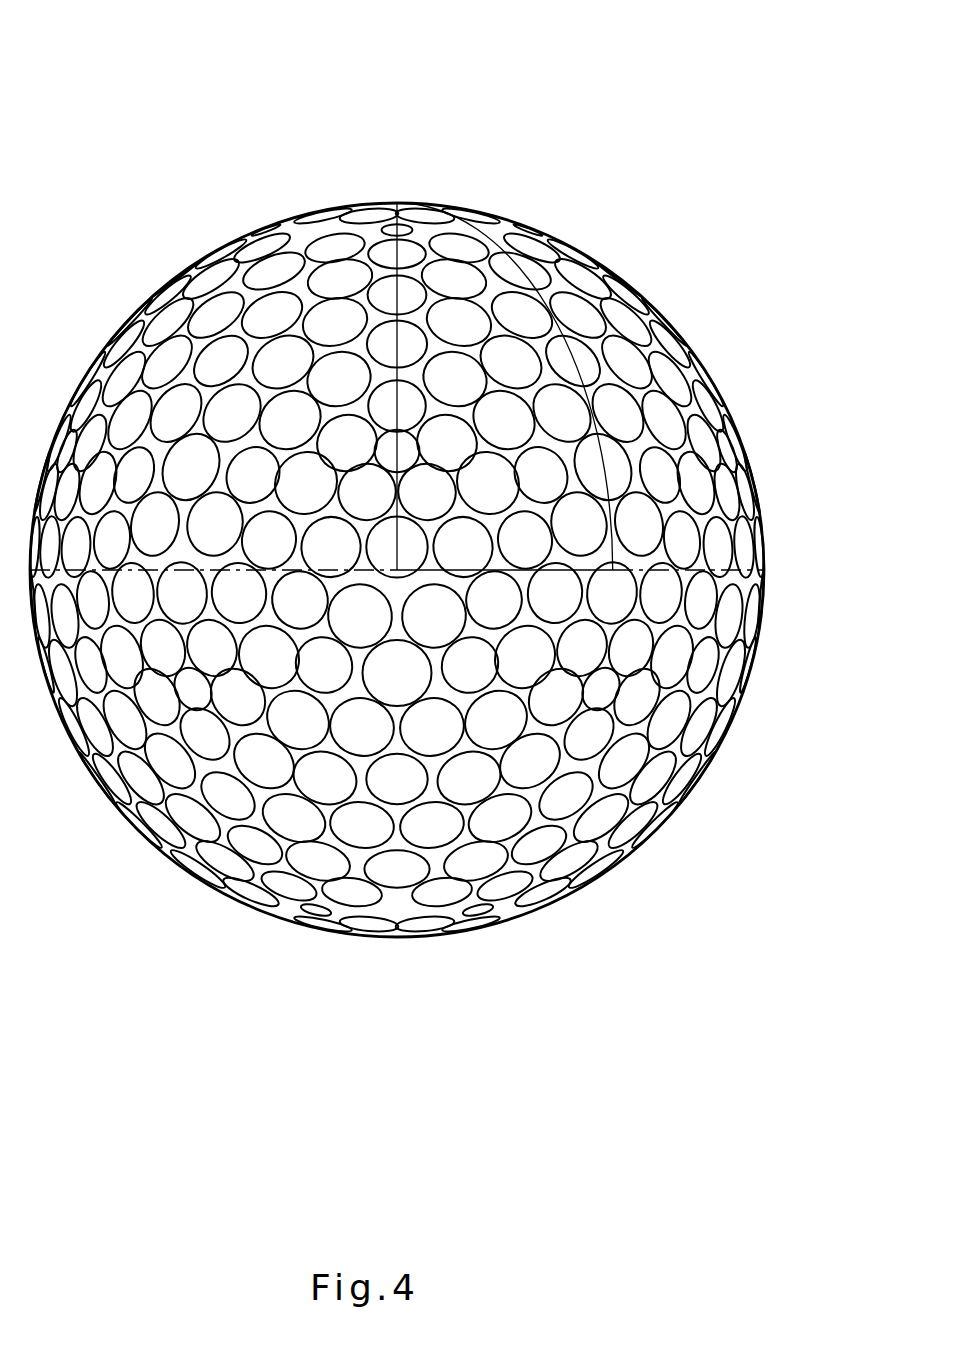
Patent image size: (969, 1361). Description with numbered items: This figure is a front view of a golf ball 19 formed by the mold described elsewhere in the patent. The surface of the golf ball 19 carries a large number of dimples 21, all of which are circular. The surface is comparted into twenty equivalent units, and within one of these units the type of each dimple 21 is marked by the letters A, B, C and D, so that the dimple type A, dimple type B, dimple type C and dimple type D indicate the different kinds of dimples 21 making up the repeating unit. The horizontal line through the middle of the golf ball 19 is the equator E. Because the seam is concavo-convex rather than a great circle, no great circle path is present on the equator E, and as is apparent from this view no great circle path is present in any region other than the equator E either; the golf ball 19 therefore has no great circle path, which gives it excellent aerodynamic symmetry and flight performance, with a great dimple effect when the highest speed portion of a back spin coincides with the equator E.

The golf ball 19 is at (848, 34).
The dimple 21 is at (343, 217).
The dimple type A is at (508, 283).
The dimple type B is at (495, 398).
The dimple type C is at (476, 403).
The dimple type D is at (407, 455).
The equator E is at (720, 558).